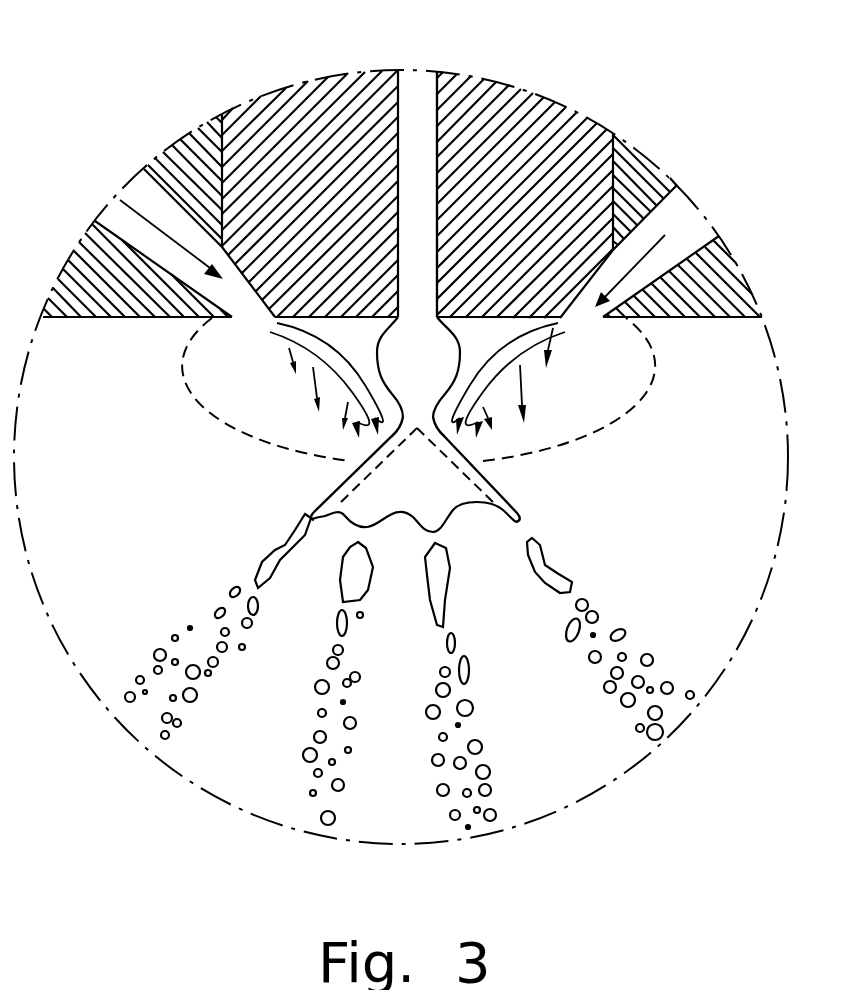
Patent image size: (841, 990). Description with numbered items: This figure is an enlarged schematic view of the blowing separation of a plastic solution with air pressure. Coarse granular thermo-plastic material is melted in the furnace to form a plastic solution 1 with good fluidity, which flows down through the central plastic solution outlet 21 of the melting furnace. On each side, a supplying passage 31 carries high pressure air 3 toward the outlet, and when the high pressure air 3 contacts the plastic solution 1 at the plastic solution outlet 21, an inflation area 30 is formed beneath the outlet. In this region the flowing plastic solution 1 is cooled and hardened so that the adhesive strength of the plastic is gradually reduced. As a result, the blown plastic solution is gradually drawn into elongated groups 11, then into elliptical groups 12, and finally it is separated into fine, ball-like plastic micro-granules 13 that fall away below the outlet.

The plastic solution 1 is at (408, 147).
The plastic solution outlet 21 is at (432, 73).
The high pressure air 3 is at (153, 222).
The supplying passage 31 is at (683, 258).
The inflation area 30 is at (210, 412).
The elongated groups 11 is at (552, 570).
The elliptical groups 12 is at (620, 627).
The plastic micro-granules 13 is at (653, 657).